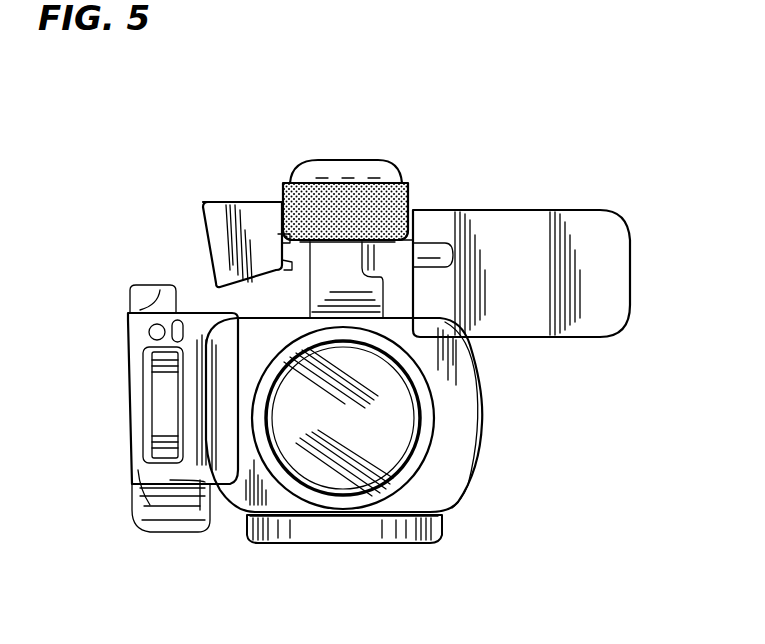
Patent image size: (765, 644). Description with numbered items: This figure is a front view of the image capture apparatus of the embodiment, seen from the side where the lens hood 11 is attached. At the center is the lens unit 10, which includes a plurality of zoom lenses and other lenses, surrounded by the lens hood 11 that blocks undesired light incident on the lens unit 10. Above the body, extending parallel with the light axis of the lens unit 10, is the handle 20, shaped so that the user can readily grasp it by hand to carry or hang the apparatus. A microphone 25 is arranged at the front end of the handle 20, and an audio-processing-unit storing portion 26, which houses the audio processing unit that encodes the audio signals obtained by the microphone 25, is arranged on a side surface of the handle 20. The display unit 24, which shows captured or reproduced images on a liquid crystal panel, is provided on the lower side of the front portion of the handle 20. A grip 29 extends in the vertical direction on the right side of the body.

The lens unit 10 is at (328, 470).
The lens hood 11 is at (462, 447).
The handle 20 is at (370, 160).
The display unit 24 is at (590, 225).
The microphone 25 is at (293, 190).
The audio-processing-unit storing portion 26 is at (214, 243).
The grip 29 is at (132, 343).